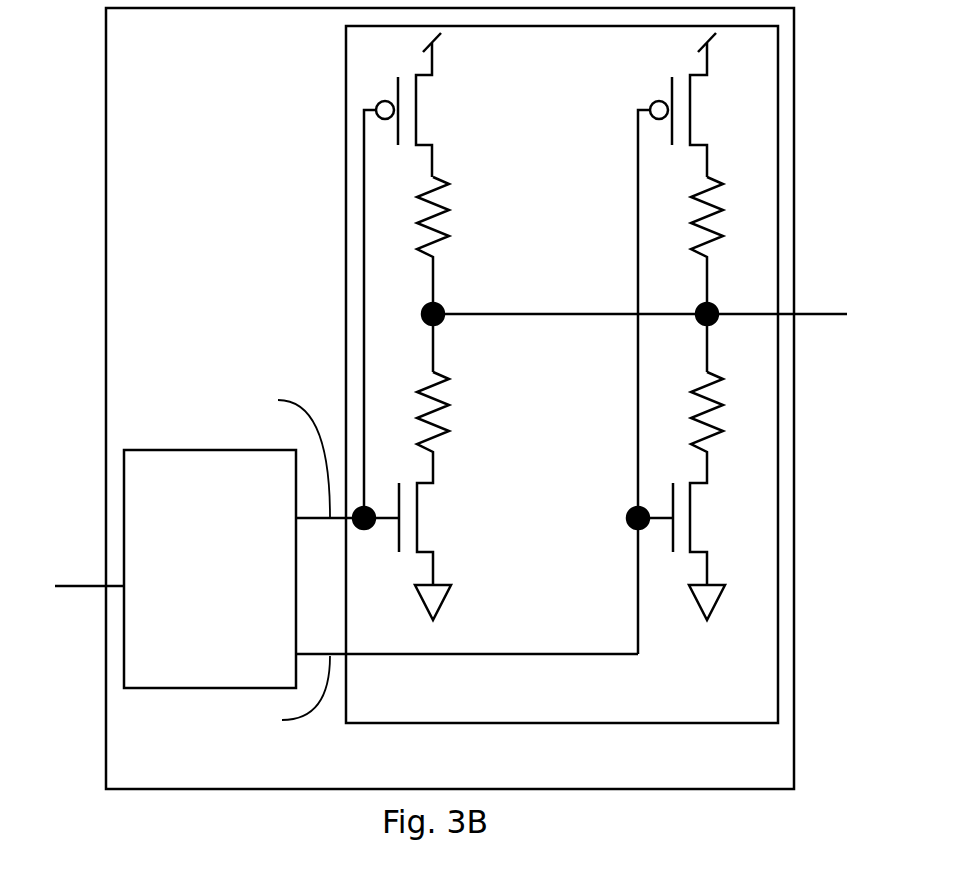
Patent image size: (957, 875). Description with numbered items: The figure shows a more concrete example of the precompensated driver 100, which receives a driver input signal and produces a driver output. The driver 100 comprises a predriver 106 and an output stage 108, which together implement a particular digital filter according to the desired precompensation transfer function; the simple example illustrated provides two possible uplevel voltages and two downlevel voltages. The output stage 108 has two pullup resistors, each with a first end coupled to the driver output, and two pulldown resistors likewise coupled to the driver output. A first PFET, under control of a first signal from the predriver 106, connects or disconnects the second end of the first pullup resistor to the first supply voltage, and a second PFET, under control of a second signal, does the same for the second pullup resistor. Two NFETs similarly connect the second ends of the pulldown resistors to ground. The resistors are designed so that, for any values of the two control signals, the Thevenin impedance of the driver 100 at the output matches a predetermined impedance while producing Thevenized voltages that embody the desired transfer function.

The driver 100 is at (457, 398).
The predriver 106 is at (210, 569).
The output stage 108 is at (619, 374).